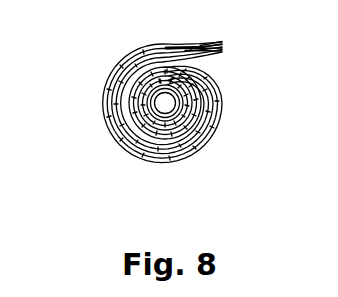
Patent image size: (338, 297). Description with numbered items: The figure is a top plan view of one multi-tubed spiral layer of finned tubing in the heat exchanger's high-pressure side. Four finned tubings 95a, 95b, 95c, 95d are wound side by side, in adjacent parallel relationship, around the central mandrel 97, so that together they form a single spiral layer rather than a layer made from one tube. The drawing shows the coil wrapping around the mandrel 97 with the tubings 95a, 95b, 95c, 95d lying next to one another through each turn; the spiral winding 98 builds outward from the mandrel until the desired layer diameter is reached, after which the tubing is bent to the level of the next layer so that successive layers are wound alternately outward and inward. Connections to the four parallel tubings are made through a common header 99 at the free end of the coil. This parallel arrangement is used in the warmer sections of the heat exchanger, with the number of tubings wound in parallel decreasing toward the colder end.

The finned tubing 95a is at (150, 155).
The finned tubing 95b is at (140, 150).
The finned tubing 95c is at (124, 142).
The finned tubing 95d is at (106, 113).
The central mandrel 97 is at (188, 82).
The spirally wound strip roll 98 is at (160, 153).
The common header 99 is at (195, 45).